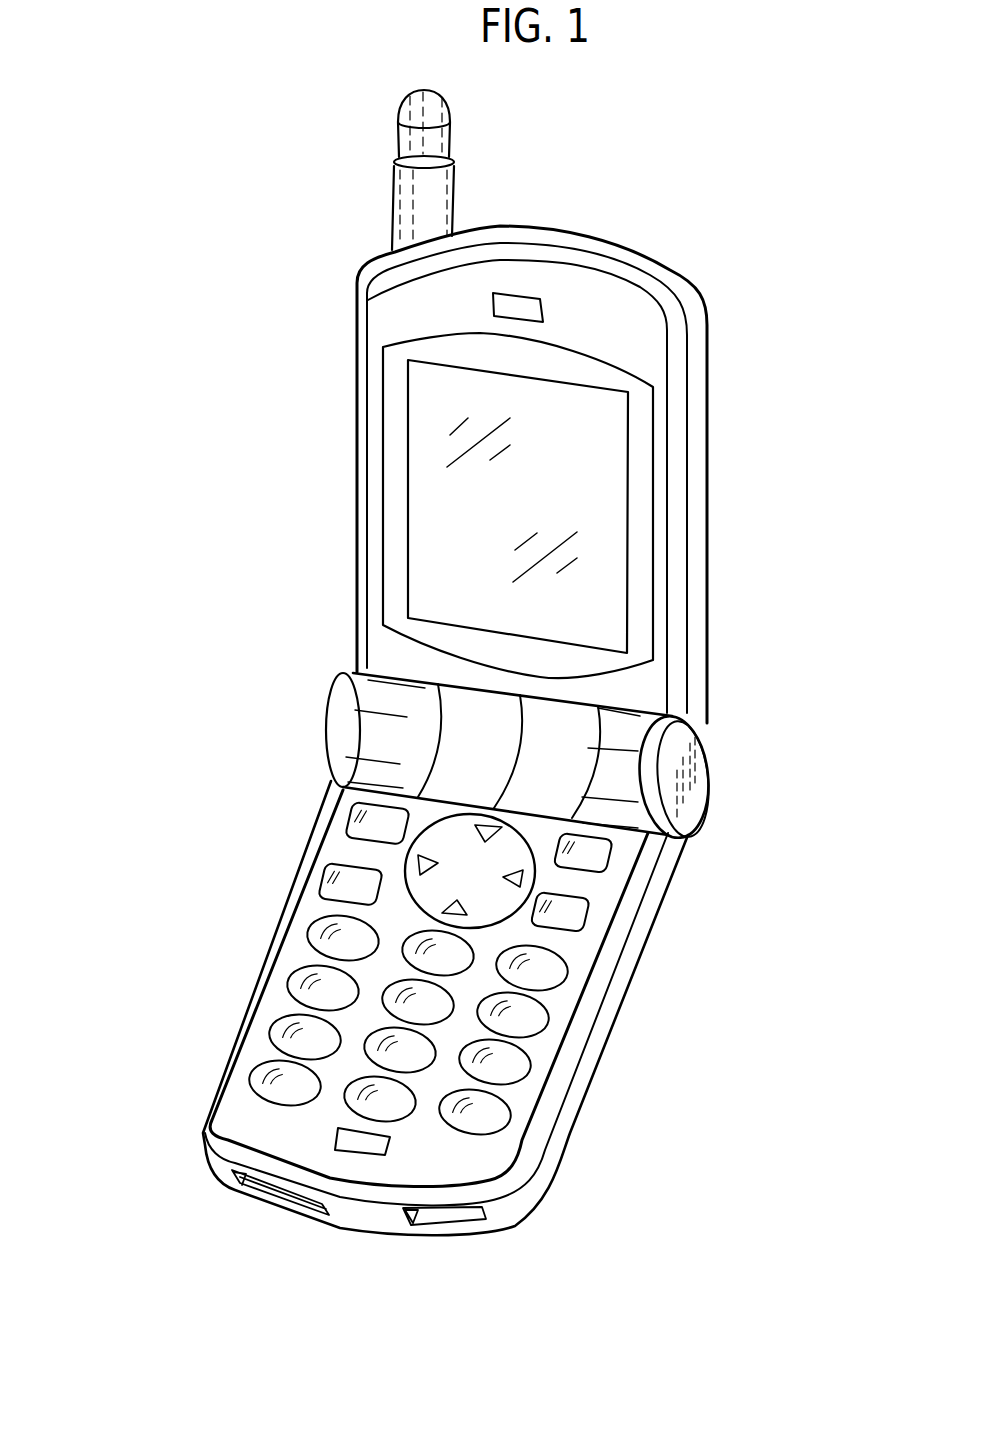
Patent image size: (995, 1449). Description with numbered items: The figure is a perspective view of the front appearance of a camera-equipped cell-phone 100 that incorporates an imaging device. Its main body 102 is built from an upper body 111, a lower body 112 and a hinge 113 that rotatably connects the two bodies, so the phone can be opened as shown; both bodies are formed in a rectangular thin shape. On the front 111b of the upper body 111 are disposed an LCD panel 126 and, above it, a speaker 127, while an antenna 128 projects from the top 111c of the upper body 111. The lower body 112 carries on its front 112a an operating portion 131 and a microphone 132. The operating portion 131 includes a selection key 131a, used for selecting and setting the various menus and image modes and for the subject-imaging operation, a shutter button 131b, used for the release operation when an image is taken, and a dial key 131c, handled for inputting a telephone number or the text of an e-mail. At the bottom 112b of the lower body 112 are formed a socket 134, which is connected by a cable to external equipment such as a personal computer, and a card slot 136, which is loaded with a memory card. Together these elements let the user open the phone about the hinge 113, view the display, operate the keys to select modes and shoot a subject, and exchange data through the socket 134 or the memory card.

The camera-equipped cell-phone 100 is at (712, 1089).
The main body 102 is at (178, 343).
The upper body 111 is at (350, 360).
The front of the upper body 111b is at (567, 307).
The top of the upper body 111c is at (505, 231).
The lower body 112 is at (271, 908).
The front of the lower body 112a is at (260, 1127).
The bottom of the lower body 112b is at (222, 1177).
The hinge 113 is at (322, 707).
The LCD panel 126 is at (457, 493).
The speaker 127 is at (512, 308).
The antenna 128 is at (408, 143).
The operating portion 131 is at (243, 1047).
The selection key 131a is at (487, 853).
The shutter button 131b is at (390, 827).
The dial key 131c is at (262, 1083).
The microphone 132 is at (360, 1147).
The socket 134 is at (437, 1217).
The card slot 136 is at (322, 1208).